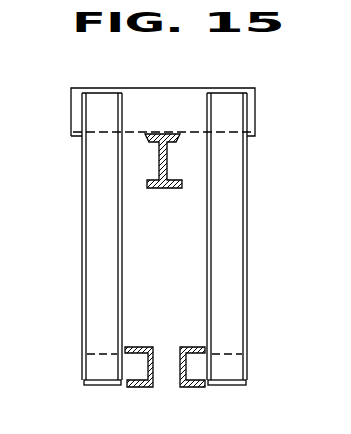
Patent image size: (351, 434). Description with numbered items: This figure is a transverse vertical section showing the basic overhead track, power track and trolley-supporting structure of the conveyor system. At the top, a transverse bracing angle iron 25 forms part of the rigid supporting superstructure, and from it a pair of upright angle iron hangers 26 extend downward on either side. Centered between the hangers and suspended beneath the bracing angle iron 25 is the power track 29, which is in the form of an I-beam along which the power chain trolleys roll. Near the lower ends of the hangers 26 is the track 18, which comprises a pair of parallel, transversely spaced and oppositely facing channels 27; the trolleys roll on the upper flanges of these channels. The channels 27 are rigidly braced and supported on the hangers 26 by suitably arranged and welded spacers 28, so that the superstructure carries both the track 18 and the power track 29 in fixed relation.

The track 18 is at (173, 245).
The transverse bracing angle irons 25 is at (192, 97).
The upright angle iron hangers 26 is at (97, 291).
The channels 27 is at (181, 352).
The spacers 28 is at (133, 372).
The power track 29 is at (165, 189).